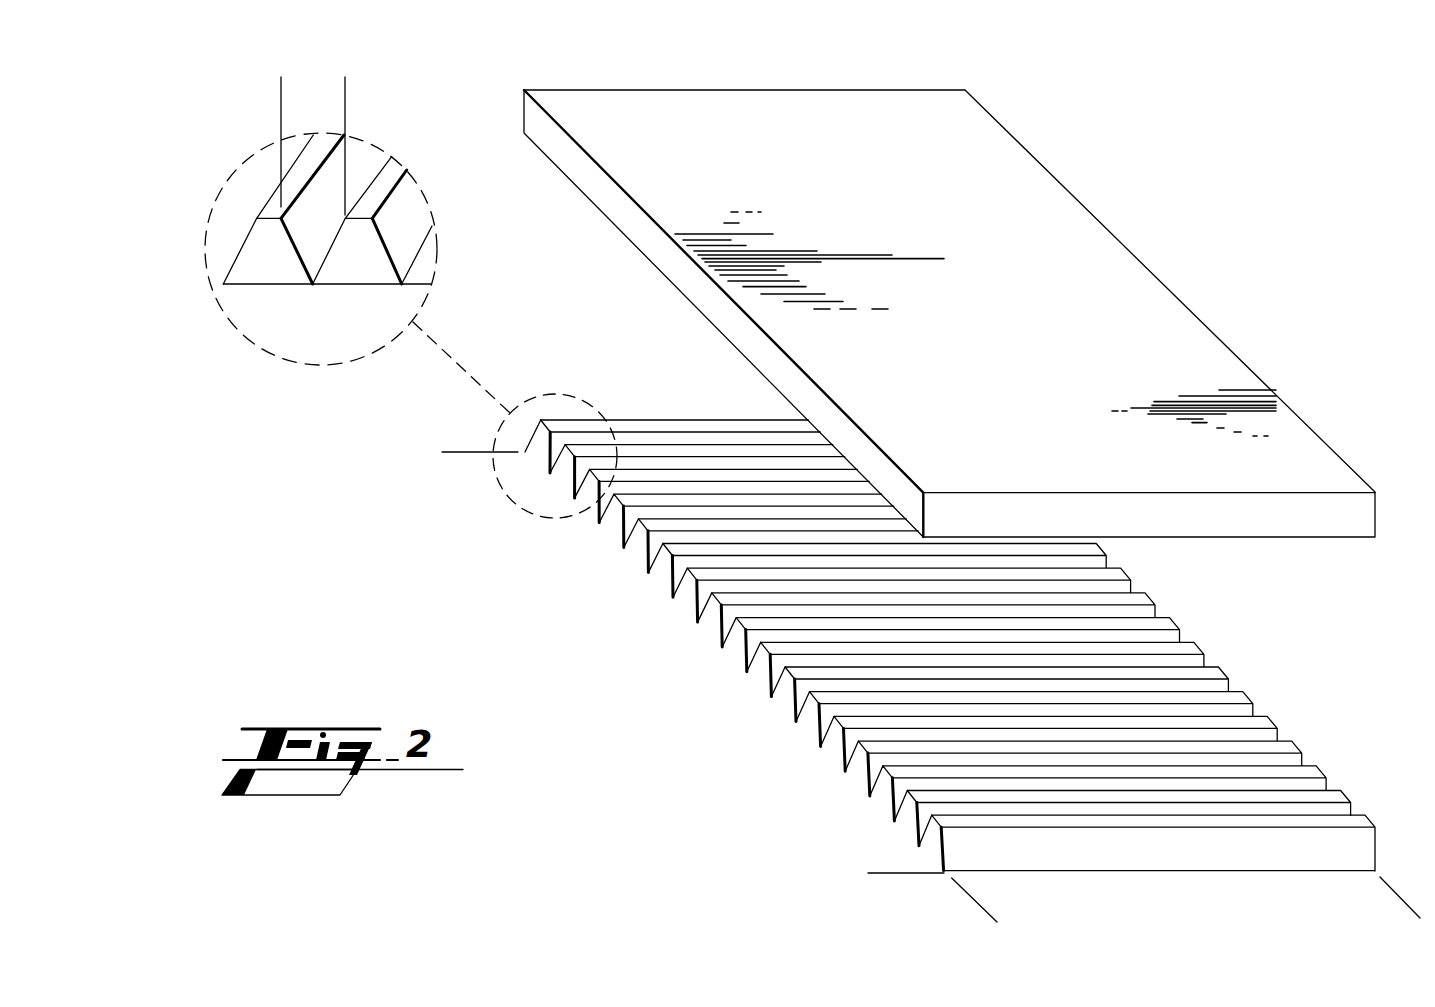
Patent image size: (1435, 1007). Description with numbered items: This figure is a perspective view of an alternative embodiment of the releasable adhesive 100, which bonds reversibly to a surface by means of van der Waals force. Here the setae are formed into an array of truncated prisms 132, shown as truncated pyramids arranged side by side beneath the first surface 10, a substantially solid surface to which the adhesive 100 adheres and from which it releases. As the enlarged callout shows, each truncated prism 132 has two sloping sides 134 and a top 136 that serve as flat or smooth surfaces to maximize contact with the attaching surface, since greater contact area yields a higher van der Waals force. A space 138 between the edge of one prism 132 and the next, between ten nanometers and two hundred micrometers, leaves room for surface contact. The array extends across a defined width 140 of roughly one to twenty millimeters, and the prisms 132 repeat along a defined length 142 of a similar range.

The first surface 10 is at (1110, 260).
The releasable adhesive 100 is at (947, 607).
The truncated prism 132 is at (935, 848).
The side 134 is at (240, 249).
The top 136 is at (267, 217).
The space 138 is at (281, 84).
The width 140 is at (1411, 908).
The length 142 is at (877, 873).